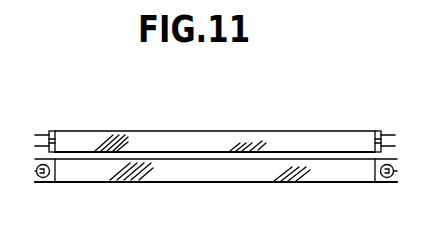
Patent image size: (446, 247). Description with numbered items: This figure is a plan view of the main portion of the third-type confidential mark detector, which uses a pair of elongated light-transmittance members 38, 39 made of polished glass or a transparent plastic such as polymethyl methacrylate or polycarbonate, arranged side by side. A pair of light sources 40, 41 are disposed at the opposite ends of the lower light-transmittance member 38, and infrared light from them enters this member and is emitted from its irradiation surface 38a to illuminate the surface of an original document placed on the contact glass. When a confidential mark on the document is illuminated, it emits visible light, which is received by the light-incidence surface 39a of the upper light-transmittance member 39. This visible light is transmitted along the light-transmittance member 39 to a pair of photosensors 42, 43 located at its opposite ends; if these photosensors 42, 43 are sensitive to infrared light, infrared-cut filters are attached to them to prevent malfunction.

The light-transmittance member 38 is at (232, 183).
The irradiation surface 38a is at (160, 176).
The light-transmittance member 39 is at (225, 129).
The light-incidence surface 39a is at (143, 136).
The light source 40 is at (389, 181).
The light source 41 is at (43, 183).
The photosensor 42 is at (375, 129).
The photosensor 43 is at (50, 130).